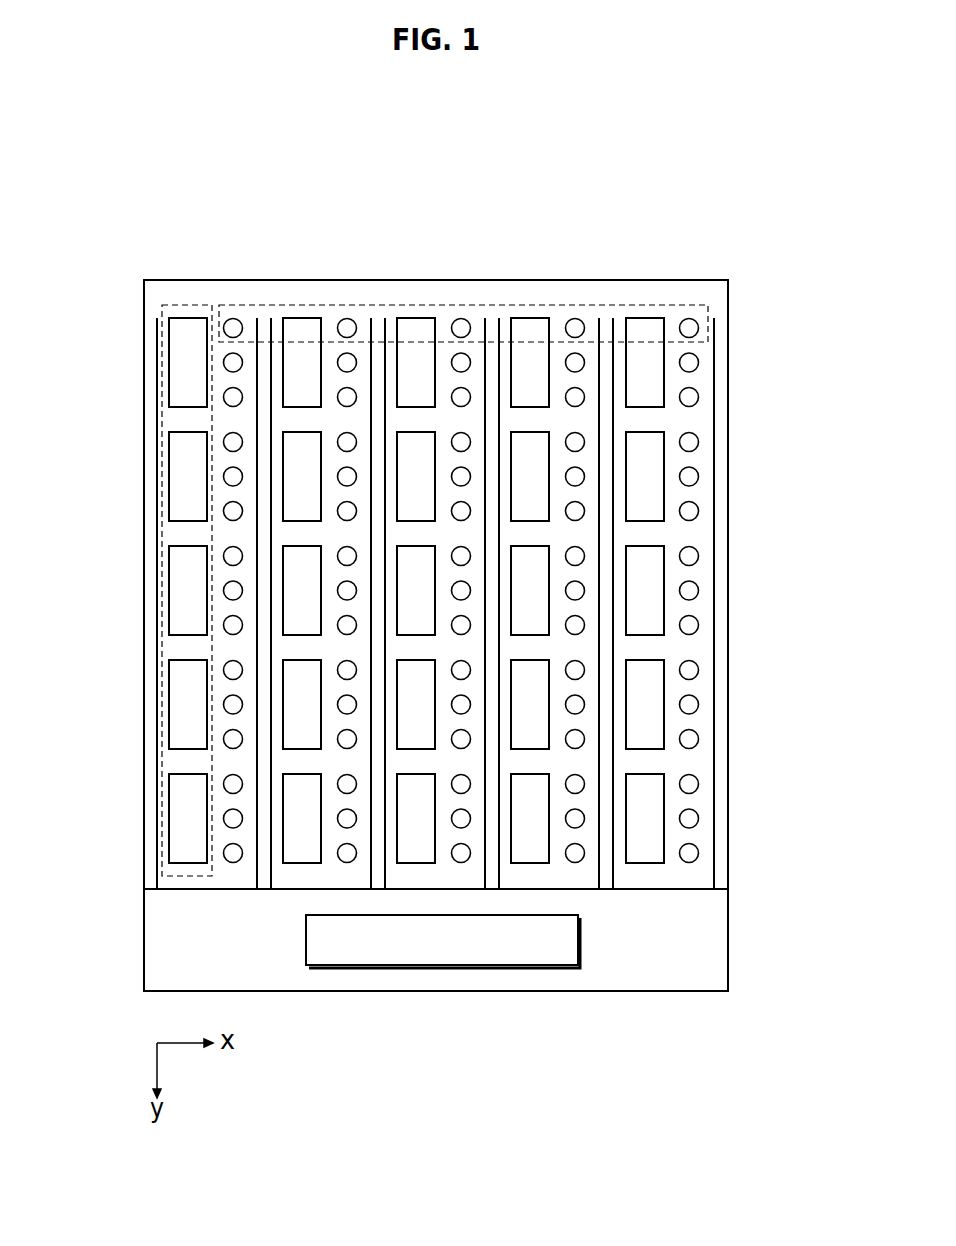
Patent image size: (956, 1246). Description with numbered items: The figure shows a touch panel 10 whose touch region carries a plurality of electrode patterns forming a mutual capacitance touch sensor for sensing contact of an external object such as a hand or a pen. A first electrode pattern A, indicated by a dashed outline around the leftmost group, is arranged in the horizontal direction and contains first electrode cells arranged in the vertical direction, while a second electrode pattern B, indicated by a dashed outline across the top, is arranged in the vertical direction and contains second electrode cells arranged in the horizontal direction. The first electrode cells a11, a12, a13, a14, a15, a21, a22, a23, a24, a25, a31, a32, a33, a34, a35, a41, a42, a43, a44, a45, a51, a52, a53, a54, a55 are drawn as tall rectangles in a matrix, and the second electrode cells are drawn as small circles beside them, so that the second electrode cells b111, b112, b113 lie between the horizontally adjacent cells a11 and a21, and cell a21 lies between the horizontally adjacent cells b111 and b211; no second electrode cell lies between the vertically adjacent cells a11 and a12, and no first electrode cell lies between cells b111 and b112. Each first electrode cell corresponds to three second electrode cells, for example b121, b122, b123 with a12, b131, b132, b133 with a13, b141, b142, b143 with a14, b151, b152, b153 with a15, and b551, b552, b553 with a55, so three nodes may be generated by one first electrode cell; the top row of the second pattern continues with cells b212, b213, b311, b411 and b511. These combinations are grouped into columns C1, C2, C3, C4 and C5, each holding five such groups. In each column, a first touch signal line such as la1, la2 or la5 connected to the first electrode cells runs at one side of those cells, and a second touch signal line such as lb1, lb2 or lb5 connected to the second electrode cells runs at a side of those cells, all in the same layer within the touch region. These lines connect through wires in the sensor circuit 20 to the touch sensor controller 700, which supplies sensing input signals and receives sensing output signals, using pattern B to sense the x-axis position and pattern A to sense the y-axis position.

The touch panel 10 is at (728, 463).
The sensor circuit 20 is at (728, 935).
The touch sensor controller 700 is at (578, 940).
The first electrode pattern A is at (185, 305).
The second electrode pattern B is at (703, 305).
The column C1 is at (258, 258).
The column C2 is at (372, 258).
The column C3 is at (486, 258).
The column C4 is at (600, 258).
The column C5 is at (714, 258).
The first touch signal line la1 is at (157, 330).
The first touch signal line la2 is at (271, 318).
The first touch signal line la5 is at (613, 416).
The second touch signal line lb1 is at (257, 318).
The second touch signal line lb2 is at (371, 318).
The second touch signal line lb5 is at (715, 370).
The first electrode cell a11 is at (188, 362).
The first electrode cell a12 is at (188, 476).
The first electrode cell a13 is at (188, 590).
The first electrode cell a14 is at (188, 704).
The first electrode cell a15 is at (188, 818).
The first electrode cell a21 is at (302, 362).
The first electrode cell a22 is at (302, 476).
The first electrode cell a23 is at (302, 590).
The first electrode cell a24 is at (302, 704).
The first electrode cell a25 is at (302, 818).
The first electrode cell a31 is at (416, 362).
The first electrode cell a32 is at (416, 476).
The first electrode cell a33 is at (416, 590).
The first electrode cell a34 is at (416, 704).
The first electrode cell a35 is at (416, 818).
The first electrode cell a41 is at (530, 362).
The first electrode cell a42 is at (530, 476).
The first electrode cell a43 is at (530, 590).
The first electrode cell a44 is at (530, 704).
The first electrode cell a45 is at (530, 818).
The first electrode cell a51 is at (645, 362).
The first electrode cell a52 is at (645, 476).
The first electrode cell a53 is at (645, 590).
The first electrode cell a54 is at (645, 704).
The first electrode cell a55 is at (645, 818).
The second electrode cell b111 is at (233, 318).
The second electrode cell b112 is at (223, 362).
The second electrode cell b113 is at (223, 397).
The second electrode cell b121 is at (223, 442).
The second electrode cell b122 is at (223, 476).
The second electrode cell b123 is at (223, 511).
The second electrode cell b131 is at (223, 556).
The second electrode cell b132 is at (223, 590).
The second electrode cell b133 is at (223, 625).
The second electrode cell b141 is at (223, 670).
The second electrode cell b142 is at (223, 704).
The second electrode cell b143 is at (223, 739).
The second electrode cell b151 is at (223, 784).
The second electrode cell b152 is at (223, 818).
The second electrode cell b153 is at (223, 853).
The second electrode cell b211 is at (347, 318).
The second electrode cell b212 is at (357, 362).
The second electrode cell b213 is at (357, 397).
The second electrode cell b311 is at (461, 318).
The second electrode cell b411 is at (576, 318).
The second electrode cell b511 is at (699, 328).
The second electrode cell b551 is at (699, 784).
The second electrode cell b552 is at (699, 818).
The second electrode cell b553 is at (699, 853).